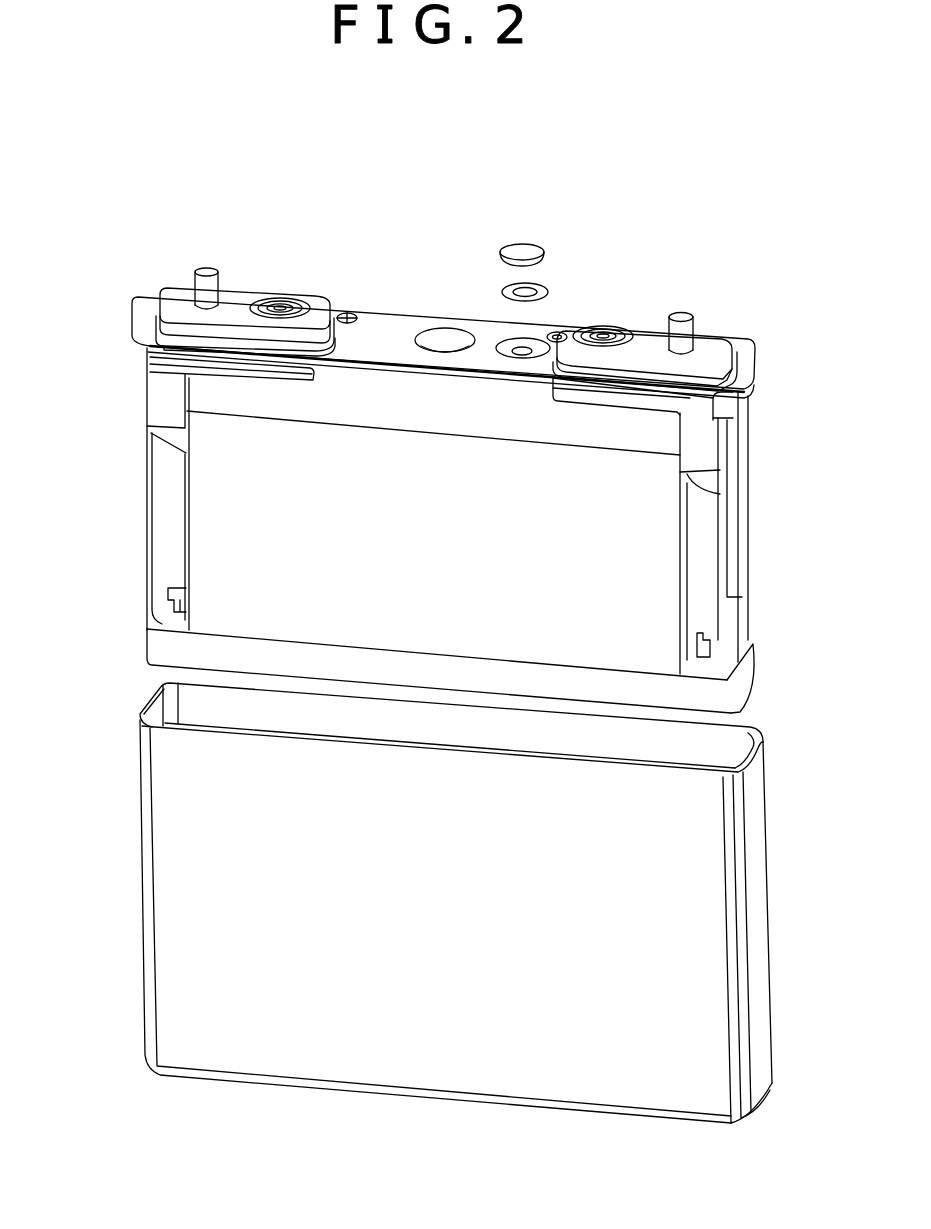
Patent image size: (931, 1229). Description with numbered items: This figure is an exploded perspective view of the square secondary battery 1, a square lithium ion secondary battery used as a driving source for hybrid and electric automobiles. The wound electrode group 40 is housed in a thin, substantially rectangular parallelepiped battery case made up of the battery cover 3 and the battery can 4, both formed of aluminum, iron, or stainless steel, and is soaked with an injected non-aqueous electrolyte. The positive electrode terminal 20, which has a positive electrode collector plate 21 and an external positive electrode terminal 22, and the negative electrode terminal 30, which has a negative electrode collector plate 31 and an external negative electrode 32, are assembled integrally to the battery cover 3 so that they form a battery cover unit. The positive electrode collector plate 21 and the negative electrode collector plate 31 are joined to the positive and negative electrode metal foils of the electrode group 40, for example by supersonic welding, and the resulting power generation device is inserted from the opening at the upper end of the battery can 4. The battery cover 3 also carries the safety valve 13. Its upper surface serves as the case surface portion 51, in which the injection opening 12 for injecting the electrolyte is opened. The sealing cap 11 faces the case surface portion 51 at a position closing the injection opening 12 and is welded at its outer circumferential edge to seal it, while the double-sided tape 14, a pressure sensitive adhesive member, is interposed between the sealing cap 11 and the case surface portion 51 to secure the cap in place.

The square secondary battery 1 is at (653, 212).
The battery cover 3 is at (385, 330).
The battery can 4 is at (188, 892).
The sealing cap 11 is at (527, 244).
The injection opening 12 is at (546, 338).
The safety valve 13 is at (437, 345).
The double-sided tape (pressure sensitive adhesive member) 14 is at (549, 285).
The positive electrode terminal 20 is at (222, 263).
The positive electrode collector plate 21 is at (160, 394).
The external positive electrode terminal 22 is at (183, 310).
The negative electrode terminal 30 is at (700, 306).
The negative electrode collector plate 31 is at (703, 431).
The external negative electrode 32 is at (700, 343).
The electrode group 40 is at (233, 524).
The case surface portion 51 is at (488, 344).